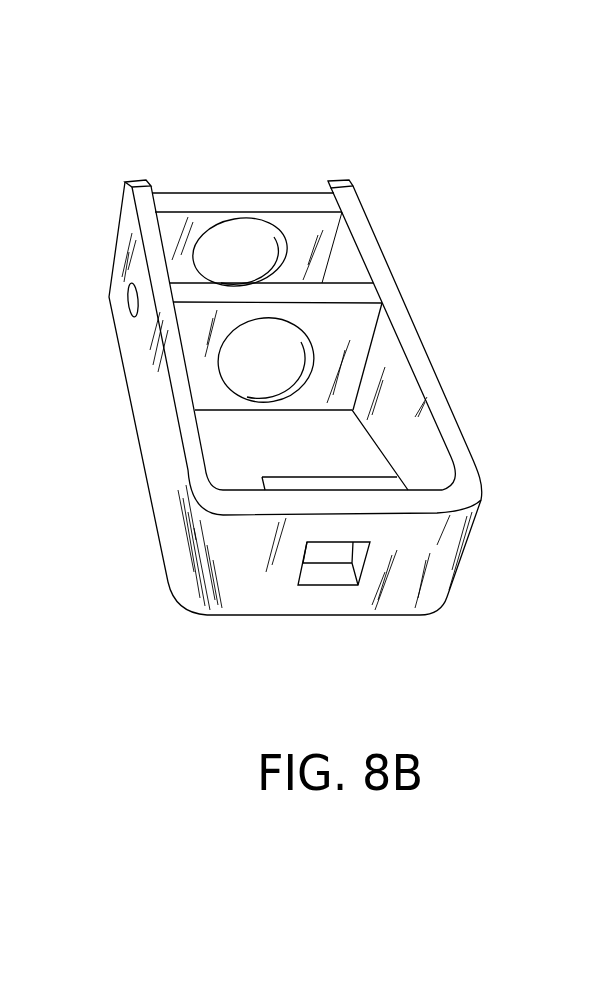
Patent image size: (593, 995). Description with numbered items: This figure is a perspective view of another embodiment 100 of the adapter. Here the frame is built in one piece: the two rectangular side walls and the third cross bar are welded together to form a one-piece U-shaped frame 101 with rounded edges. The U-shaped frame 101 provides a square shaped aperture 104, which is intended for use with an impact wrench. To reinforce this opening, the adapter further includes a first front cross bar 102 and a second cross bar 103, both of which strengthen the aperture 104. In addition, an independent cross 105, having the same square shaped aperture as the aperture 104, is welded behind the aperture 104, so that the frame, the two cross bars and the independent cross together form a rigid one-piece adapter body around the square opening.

The adapter embodiment 100 is at (357, 136).
The U-shaped frame 101 is at (406, 562).
The first front cross bar 102 is at (215, 207).
The second cross bar 103 is at (362, 300).
The square shaped aperture 104 is at (315, 570).
The independent cross 105 is at (388, 483).